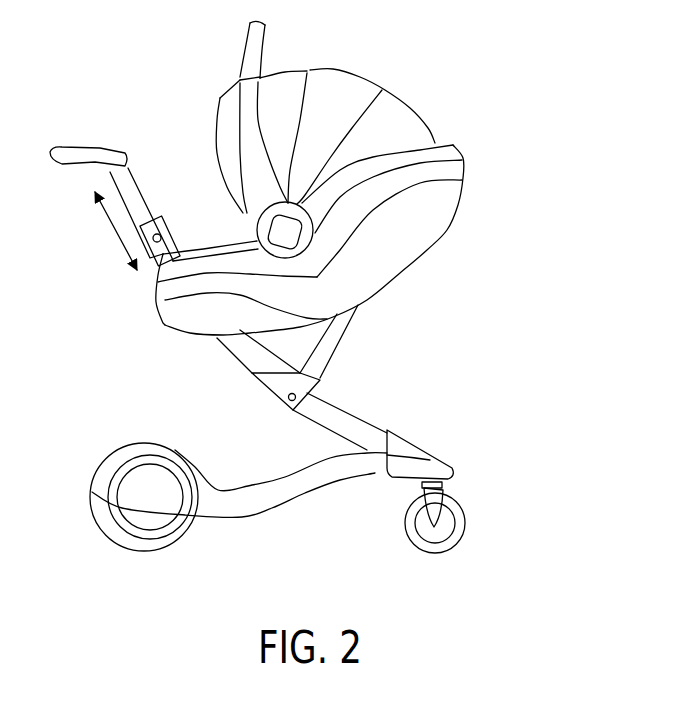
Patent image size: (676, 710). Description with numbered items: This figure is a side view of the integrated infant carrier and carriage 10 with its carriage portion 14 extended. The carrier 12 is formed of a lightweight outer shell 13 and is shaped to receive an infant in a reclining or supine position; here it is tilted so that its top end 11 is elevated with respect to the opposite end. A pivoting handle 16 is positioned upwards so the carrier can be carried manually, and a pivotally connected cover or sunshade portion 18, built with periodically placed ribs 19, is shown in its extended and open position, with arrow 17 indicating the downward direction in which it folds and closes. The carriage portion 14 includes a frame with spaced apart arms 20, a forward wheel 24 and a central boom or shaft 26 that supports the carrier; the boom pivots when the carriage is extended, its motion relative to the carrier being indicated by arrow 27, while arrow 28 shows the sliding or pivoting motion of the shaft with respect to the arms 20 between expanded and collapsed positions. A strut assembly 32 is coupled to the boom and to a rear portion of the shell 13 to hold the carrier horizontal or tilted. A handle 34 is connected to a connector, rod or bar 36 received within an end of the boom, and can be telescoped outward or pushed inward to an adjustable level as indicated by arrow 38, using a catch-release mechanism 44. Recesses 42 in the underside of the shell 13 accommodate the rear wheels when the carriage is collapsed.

The integrated infant carrier and carriage 10 is at (157, 69).
The top end 11 is at (473, 138).
The carrier 12 is at (509, 186).
The outer shell 13 is at (451, 222).
The carriage portion 14 is at (563, 280).
The pivoting handle 16 is at (247, 86).
The arrow 17 is at (460, 101).
The cover or sunshade portion 18 is at (373, 83).
The ribs 19 is at (217, 120).
The arms 20 is at (282, 503).
The forward wheel 24 is at (462, 525).
The central boom or shaft 26 is at (347, 413).
The arrow 27 is at (500, 285).
The arrow 28 is at (223, 363).
The strut assembly 32 is at (349, 324).
The handle 34 is at (87, 152).
The connector, rod or bar 36 is at (132, 195).
The arrow 38 is at (112, 238).
The recesses 42 is at (194, 330).
The catch-release mechanism 44 is at (163, 225).